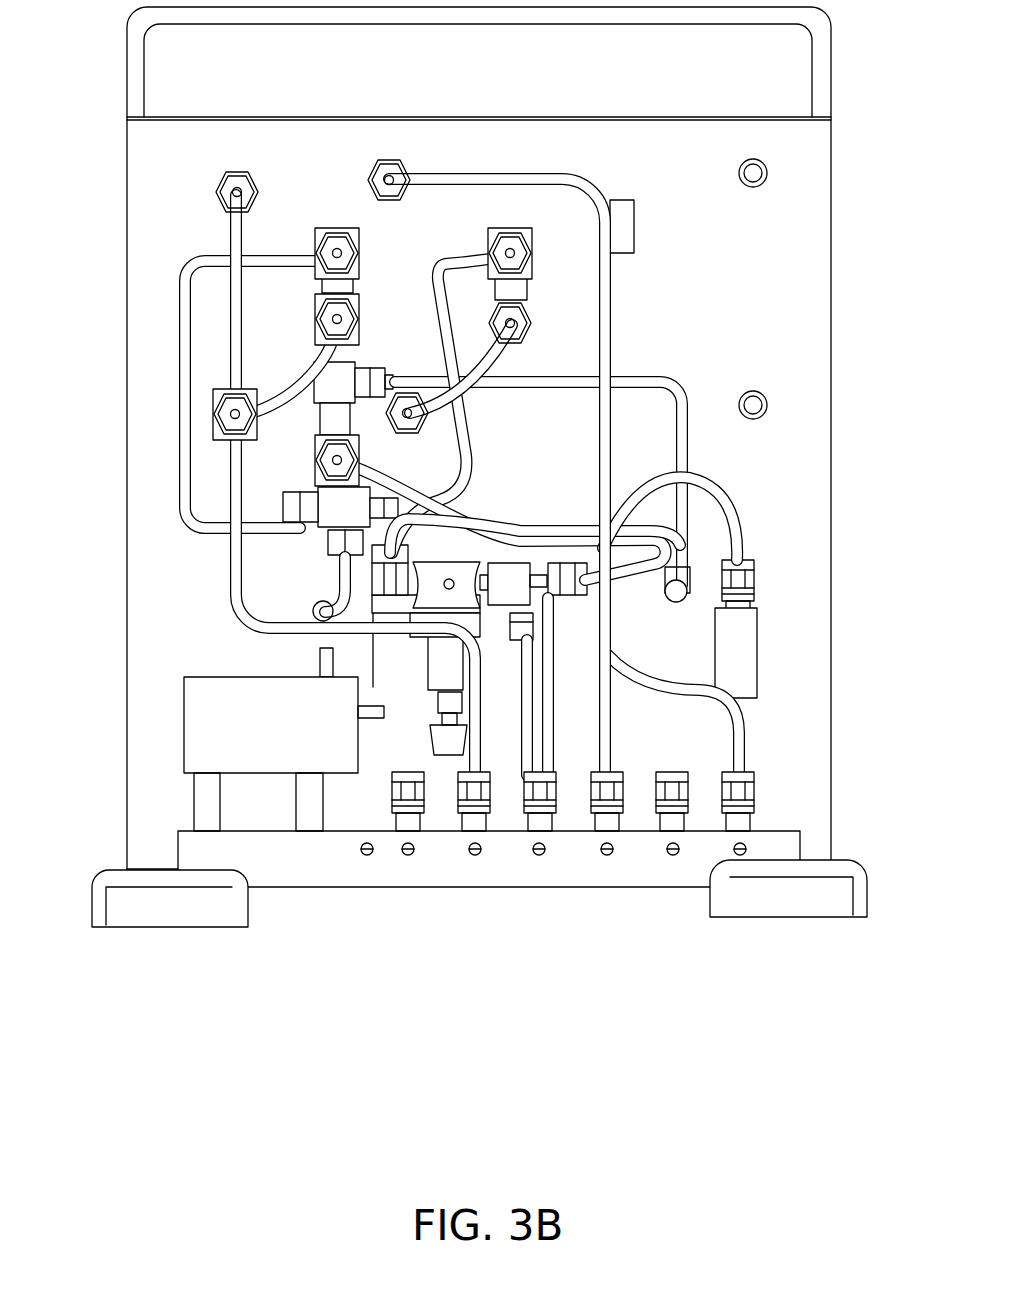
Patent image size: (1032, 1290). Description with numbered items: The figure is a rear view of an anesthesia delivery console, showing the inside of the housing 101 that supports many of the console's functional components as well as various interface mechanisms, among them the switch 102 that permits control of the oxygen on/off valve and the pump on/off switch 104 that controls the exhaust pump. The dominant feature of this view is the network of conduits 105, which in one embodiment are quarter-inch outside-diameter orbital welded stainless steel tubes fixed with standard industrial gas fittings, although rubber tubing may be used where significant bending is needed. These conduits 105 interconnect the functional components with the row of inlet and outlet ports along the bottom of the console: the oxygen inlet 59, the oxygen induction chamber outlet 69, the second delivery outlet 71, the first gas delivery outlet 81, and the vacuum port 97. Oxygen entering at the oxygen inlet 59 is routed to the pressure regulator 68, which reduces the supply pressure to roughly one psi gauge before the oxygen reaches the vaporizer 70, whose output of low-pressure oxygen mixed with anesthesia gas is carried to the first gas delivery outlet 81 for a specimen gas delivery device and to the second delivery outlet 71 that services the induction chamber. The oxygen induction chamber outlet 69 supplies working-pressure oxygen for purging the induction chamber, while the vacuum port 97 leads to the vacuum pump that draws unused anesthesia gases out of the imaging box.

The housing 101 is at (787, 552).
The switch 102 is at (758, 653).
The pump on/off switch 104 is at (622, 222).
The conduits 105 is at (185, 323).
The pressure regulator 68 is at (262, 734).
The vaporizer 70 is at (396, 743).
The second delivery outlet 71 is at (473, 856).
The oxygen induction chamber outlet 69 is at (539, 856).
The first gas delivery outlet 81 is at (606, 856).
The vacuum port 97 is at (672, 856).
The oxygen inlet 59 is at (739, 856).